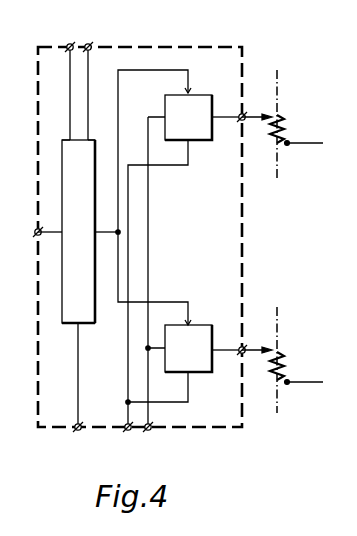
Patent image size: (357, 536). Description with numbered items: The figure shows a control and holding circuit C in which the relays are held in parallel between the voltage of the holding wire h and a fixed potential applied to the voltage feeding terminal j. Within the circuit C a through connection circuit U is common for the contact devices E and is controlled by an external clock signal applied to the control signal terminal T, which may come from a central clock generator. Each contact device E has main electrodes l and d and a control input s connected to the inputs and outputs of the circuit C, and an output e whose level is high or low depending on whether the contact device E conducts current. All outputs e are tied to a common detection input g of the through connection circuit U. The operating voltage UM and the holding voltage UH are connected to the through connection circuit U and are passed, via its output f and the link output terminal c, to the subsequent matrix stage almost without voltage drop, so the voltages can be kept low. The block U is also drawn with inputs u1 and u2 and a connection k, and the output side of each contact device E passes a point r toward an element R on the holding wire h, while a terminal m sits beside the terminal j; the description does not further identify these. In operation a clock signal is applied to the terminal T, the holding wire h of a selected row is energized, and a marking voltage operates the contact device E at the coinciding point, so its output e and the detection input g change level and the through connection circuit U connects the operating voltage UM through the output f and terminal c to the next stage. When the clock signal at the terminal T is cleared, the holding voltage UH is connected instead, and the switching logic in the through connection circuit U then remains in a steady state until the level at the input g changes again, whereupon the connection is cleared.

The control and holding circuit C is at (176, 47).
The through connection circuit U is at (94, 323).
The holding voltage UH is at (69, 44).
The operating voltage UM is at (89, 44).
The second input of block U u2 is at (63, 140).
The first input of block U u1 is at (93, 140).
The link output terminal c is at (35, 231).
The output of the through connection circuit f is at (58, 231).
The detection input g is at (114, 231).
The output line k is at (73, 326).
The control signal terminal T is at (78, 432).
The output of the contact device e is at (190, 93).
The control input s is at (160, 116).
The main electrode d is at (183, 165).
The contact device E is at (210, 141).
The main electrode l is at (216, 117).
The output terminal r is at (245, 117).
The potentiometer resistor R is at (286, 124).
The holding wire h is at (322, 143).
The voltage feeding terminal j is at (128, 432).
The terminal m is at (148, 432).